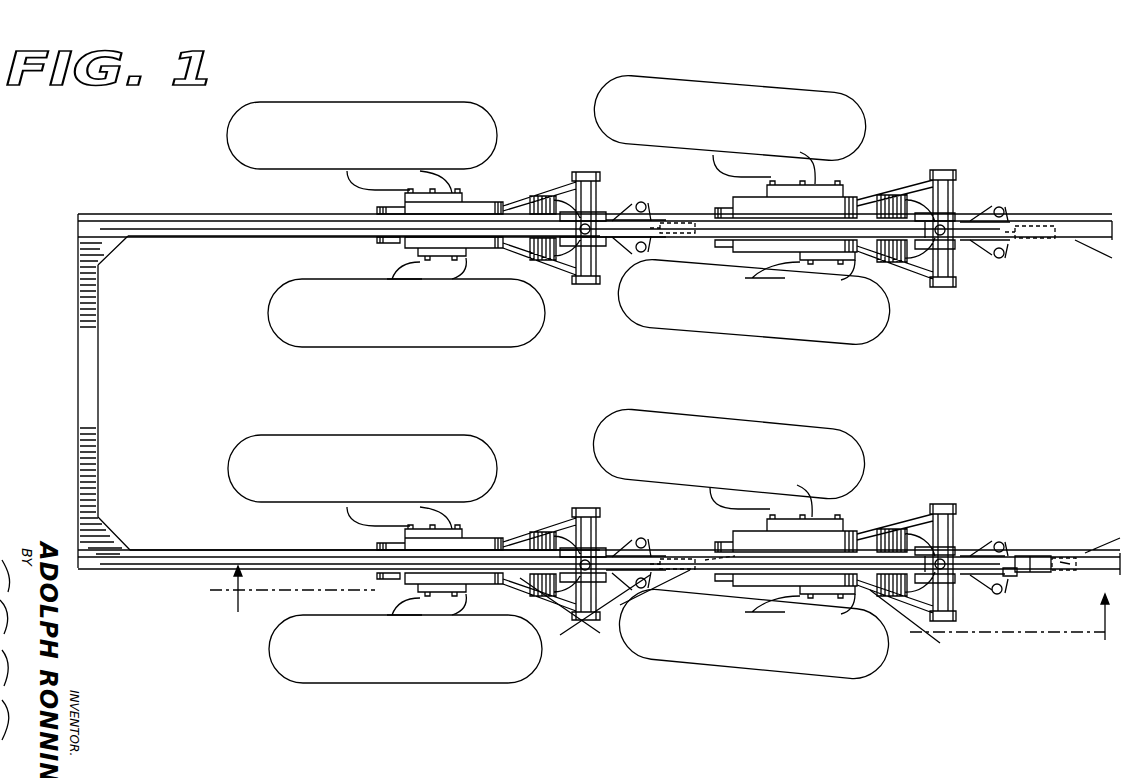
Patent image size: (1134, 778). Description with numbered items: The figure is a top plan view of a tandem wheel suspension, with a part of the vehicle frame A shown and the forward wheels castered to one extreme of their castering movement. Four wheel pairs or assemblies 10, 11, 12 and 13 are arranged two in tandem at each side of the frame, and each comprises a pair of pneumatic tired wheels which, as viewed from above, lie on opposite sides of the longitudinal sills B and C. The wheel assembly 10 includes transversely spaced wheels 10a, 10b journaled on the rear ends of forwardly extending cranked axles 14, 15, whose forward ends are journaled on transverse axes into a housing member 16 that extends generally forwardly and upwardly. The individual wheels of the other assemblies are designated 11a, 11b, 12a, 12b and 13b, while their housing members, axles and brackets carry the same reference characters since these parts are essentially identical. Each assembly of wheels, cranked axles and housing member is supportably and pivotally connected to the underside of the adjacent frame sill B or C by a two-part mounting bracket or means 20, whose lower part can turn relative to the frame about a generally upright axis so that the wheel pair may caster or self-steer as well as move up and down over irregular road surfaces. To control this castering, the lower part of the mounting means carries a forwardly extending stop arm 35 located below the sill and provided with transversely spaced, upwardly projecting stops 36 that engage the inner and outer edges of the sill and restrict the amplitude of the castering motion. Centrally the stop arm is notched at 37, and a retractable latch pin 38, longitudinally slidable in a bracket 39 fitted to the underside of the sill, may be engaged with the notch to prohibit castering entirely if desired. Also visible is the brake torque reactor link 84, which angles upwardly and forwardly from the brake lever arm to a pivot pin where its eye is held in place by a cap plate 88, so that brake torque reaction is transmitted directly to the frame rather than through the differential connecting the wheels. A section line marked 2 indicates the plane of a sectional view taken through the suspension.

The vehicle frame A is at (78, 418).
The longitudinal sill B is at (148, 570).
The longitudinal sill C is at (182, 214).
The wheel pair or assembly 10 is at (730, 563).
The wheel 10a is at (753, 634).
The wheel 10b is at (728, 454).
The wheel pair or assembly 11 is at (364, 584).
The wheel 11a is at (405, 649).
The wheel 11b is at (362, 468).
The wheel pair or assembly 12 is at (730, 106).
The wheel 12a is at (580, 302).
The wheel 12b is at (818, 66).
The wheel pair or assembly 13 is at (362, 116).
The wheel 13b is at (362, 135).
The cranked axle 14 is at (462, 268).
The cranked axle 15 is at (430, 184).
The housing member 16 is at (502, 202).
The mounting bracket or means 20 is at (598, 214).
The stop arm 35 is at (616, 268).
The stops 36 is at (646, 206).
The notch 37 is at (1006, 574).
The retractable latch pin 38 is at (1022, 556).
The bracket 39 is at (1060, 554).
The brake torque reactor link 84 is at (528, 180).
The cap plate 88 is at (590, 512).
The section line 2- 2 is at (668, 627).